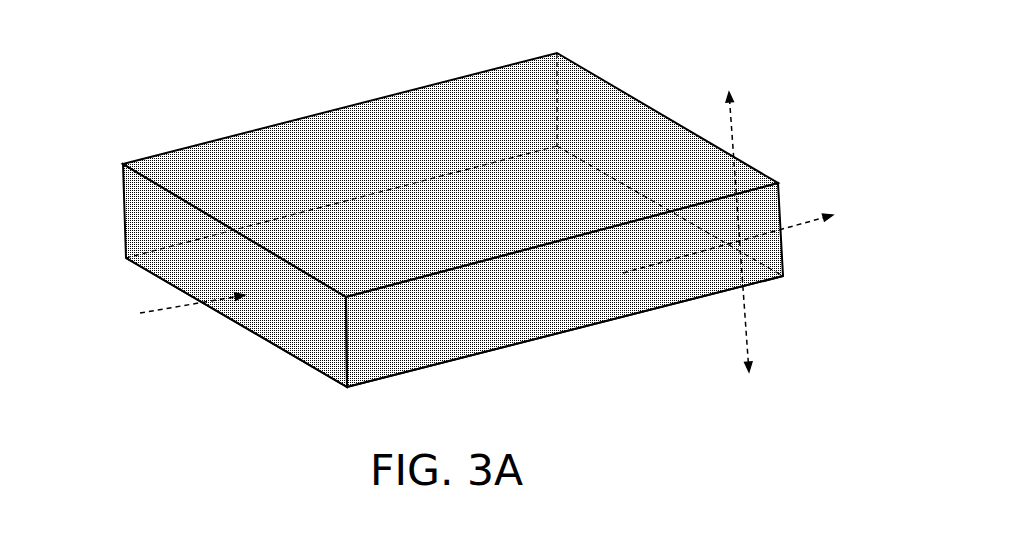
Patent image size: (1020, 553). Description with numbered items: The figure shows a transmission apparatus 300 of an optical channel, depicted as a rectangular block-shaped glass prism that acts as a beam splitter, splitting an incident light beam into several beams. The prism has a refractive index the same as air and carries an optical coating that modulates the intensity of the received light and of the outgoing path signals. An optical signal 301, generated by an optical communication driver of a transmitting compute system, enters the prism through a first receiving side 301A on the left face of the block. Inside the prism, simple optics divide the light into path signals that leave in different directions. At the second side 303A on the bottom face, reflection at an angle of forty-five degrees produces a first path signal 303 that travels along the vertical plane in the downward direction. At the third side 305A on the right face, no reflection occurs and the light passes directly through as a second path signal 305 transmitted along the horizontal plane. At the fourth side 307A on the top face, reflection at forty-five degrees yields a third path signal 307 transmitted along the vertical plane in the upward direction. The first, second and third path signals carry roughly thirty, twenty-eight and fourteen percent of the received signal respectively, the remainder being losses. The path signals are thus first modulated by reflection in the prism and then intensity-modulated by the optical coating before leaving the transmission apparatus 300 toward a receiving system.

The transmission apparatus 300 is at (163, 102).
The optical signal 301 is at (128, 313).
The first receiving side 301A is at (157, 243).
The first path signal 303 is at (732, 327).
The second side 303A is at (755, 283).
The second path signal 305 is at (808, 208).
The third side 305A is at (785, 248).
The third path signal 307 is at (745, 130).
The fourth side 307A is at (627, 108).